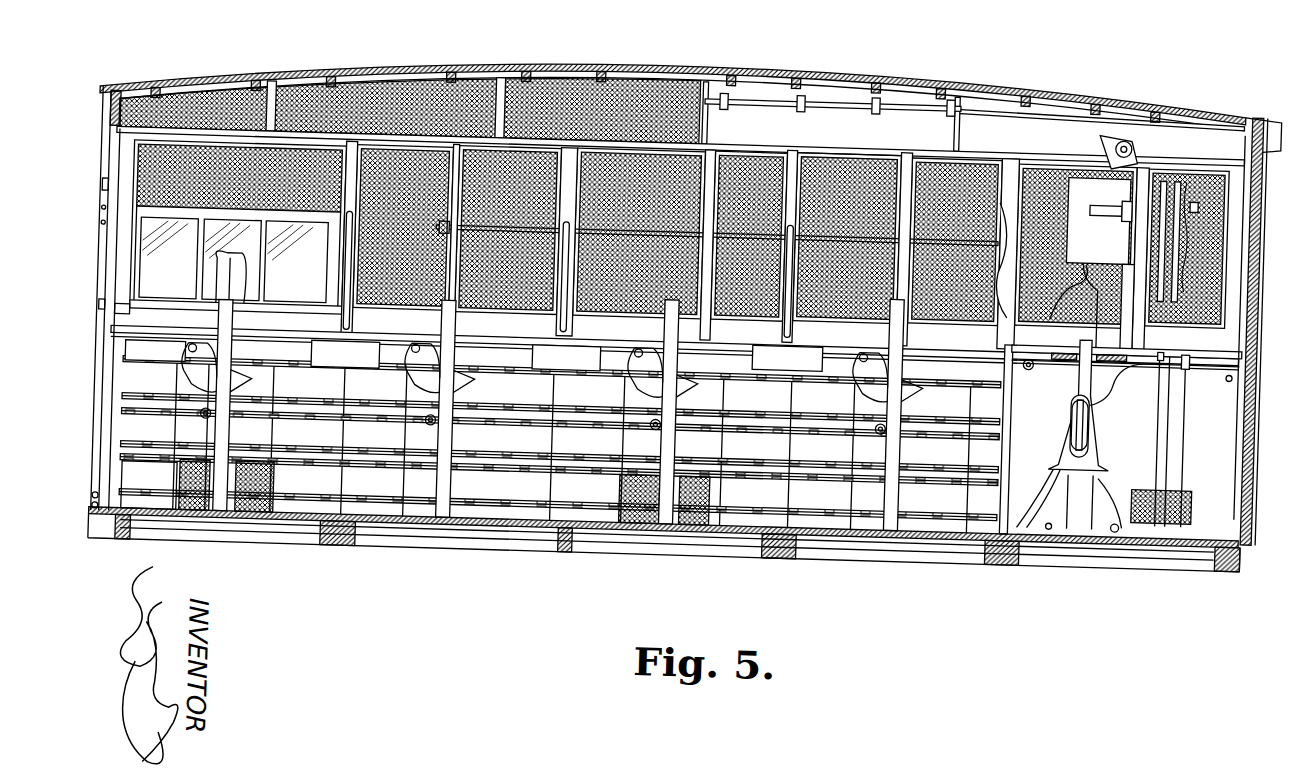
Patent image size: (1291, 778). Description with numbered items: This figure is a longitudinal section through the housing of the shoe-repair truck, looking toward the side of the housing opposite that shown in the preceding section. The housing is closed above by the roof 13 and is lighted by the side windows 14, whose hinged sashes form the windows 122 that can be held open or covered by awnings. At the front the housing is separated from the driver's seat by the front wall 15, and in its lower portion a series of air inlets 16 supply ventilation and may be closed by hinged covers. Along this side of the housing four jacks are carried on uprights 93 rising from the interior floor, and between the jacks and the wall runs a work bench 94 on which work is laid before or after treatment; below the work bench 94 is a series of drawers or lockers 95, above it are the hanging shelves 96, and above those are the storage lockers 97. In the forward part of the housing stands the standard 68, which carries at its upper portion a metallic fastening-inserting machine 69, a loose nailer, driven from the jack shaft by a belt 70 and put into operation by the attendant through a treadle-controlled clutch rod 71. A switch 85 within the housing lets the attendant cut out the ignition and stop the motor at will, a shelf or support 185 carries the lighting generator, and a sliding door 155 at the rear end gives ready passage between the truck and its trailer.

The roof 13 is at (697, 54).
The storage lockers 97 is at (432, 64).
The hanging shelves 96 is at (844, 140).
The side windows 14 is at (238, 225).
The windows 122 is at (206, 303).
The work bench 94 is at (808, 327).
The uprights 93 is at (222, 435).
The air inlets 16 is at (283, 468).
The sliding door 155 is at (147, 485).
The drawers or lockers 95 is at (599, 516).
The switch 85 is at (1032, 343).
The standard 68 is at (1111, 362).
The treadle-controlled clutch rod 71 is at (1154, 420).
The shelf or support 185 is at (1215, 347).
The front wall 15 is at (1246, 425).
The metallic fastening-inserting machine 69 is at (1101, 246).
The belt 70 is at (1180, 163).